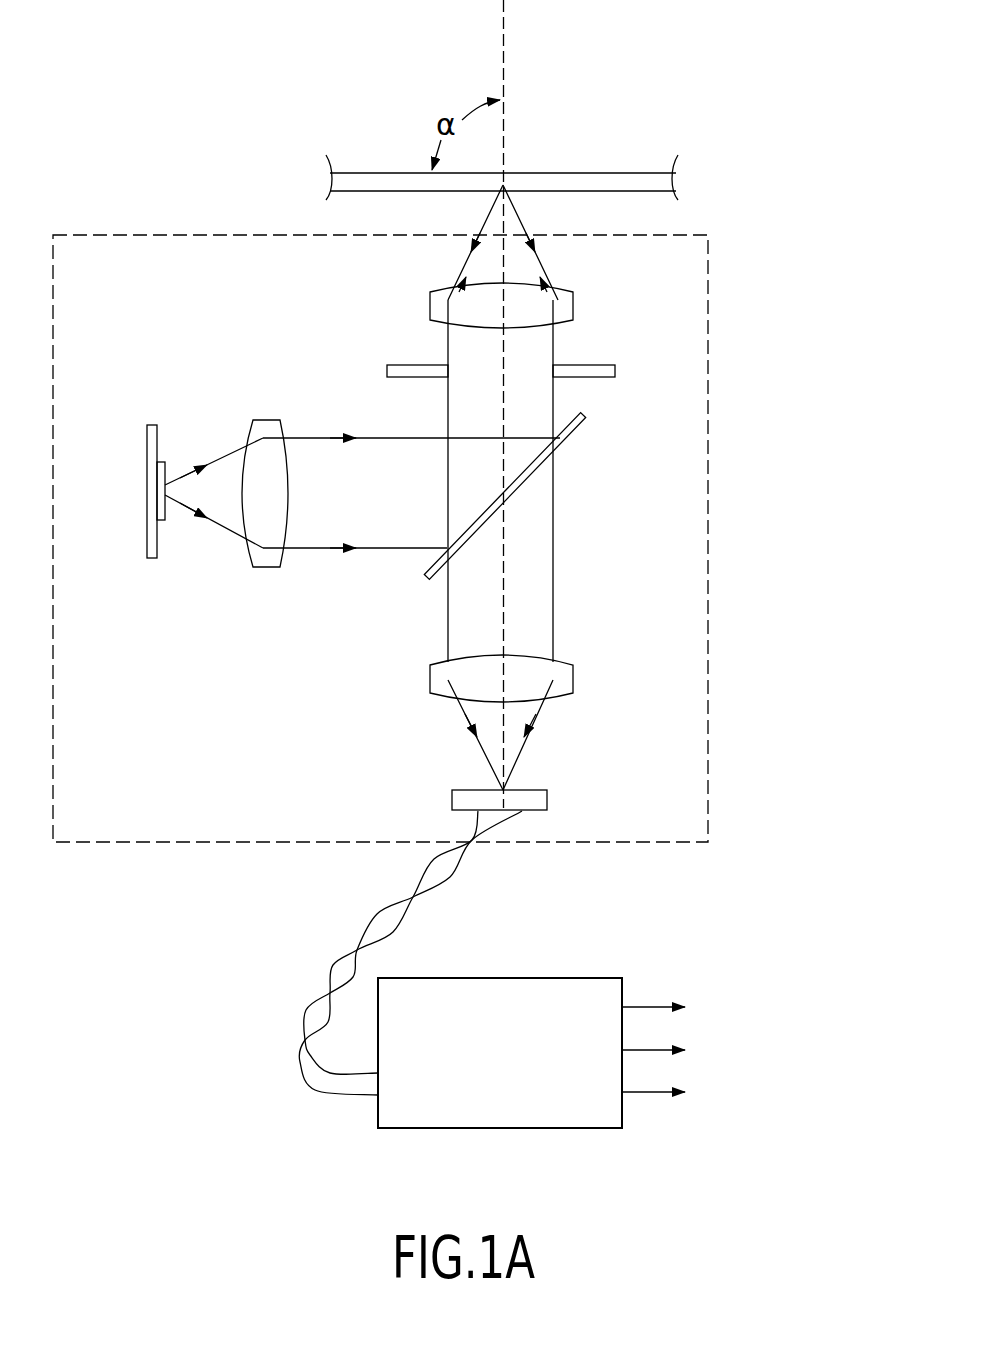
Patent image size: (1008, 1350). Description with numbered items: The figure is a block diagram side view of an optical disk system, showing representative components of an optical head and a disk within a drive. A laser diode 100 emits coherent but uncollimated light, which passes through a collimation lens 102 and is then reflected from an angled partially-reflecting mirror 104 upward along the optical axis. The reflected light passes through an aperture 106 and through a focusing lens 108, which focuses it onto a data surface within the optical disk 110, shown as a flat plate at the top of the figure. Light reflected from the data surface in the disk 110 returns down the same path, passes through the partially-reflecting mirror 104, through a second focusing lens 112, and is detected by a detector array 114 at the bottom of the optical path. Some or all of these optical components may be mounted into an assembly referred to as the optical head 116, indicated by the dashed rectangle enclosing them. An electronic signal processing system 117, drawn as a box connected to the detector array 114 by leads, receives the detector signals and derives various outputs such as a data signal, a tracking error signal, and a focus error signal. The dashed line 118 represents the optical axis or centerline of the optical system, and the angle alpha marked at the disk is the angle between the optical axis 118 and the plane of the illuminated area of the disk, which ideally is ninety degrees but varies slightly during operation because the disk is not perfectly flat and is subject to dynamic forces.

The laser diode 100 is at (150, 425).
The collimation lens 102 is at (270, 567).
The partially-reflecting mirror 104 is at (580, 427).
The aperture 106 is at (583, 365).
The focusing lens 108 is at (573, 305).
The optical disk 110 is at (610, 172).
The focusing lens 112 is at (573, 678).
The detector array 114 is at (547, 796).
The optical head 116 is at (708, 440).
The electronic signal processing system 117 is at (525, 1079).
The optical axis 118 is at (506, 23).